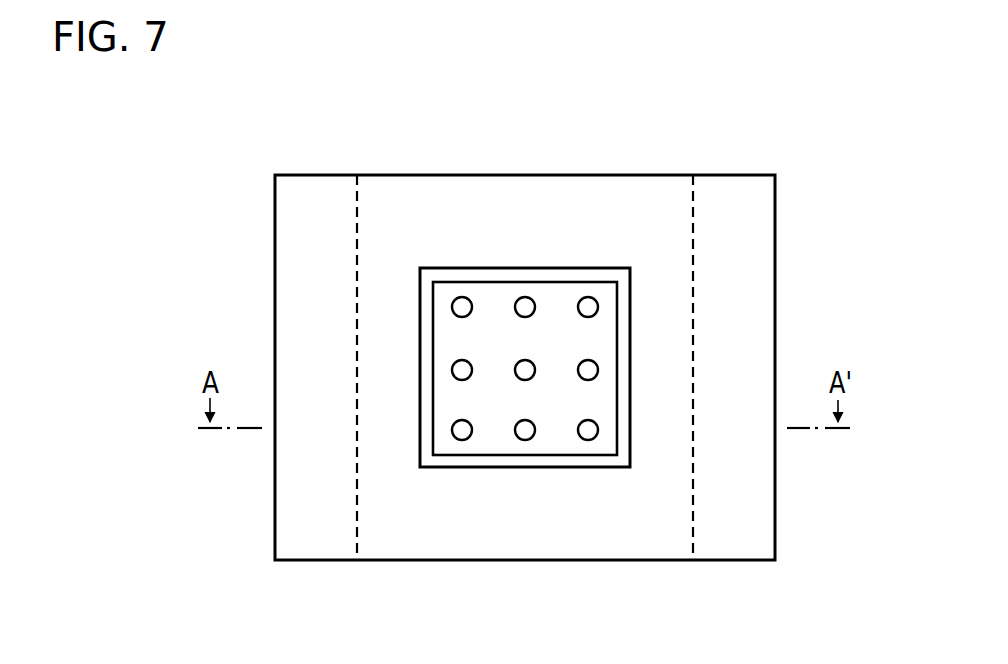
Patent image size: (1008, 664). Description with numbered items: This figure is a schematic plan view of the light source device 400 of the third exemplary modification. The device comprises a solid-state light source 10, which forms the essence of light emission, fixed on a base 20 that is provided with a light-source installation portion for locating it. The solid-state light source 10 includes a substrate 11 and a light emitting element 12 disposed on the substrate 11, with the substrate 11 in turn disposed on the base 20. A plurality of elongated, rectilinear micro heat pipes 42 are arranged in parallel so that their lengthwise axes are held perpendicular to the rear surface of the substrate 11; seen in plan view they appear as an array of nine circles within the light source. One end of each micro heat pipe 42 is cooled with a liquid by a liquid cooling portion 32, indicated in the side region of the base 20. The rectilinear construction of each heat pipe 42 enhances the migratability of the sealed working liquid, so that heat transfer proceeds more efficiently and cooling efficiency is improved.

The light source device 400 is at (880, 130).
The base 20 is at (765, 236).
The liquid cooling portion 32 is at (660, 527).
The solid-state light source 10 is at (581, 260).
The light emitting element 12 is at (600, 461).
The substrate 11 is at (577, 469).
The micro heat pipes 42 is at (459, 297).